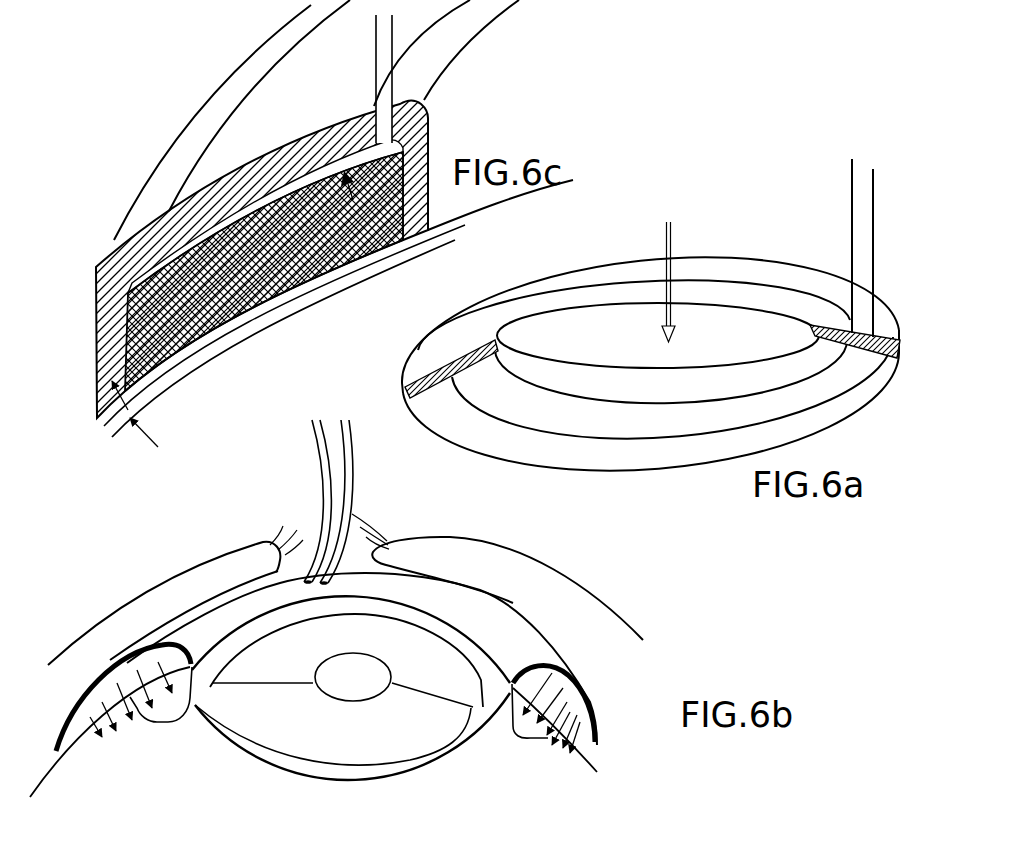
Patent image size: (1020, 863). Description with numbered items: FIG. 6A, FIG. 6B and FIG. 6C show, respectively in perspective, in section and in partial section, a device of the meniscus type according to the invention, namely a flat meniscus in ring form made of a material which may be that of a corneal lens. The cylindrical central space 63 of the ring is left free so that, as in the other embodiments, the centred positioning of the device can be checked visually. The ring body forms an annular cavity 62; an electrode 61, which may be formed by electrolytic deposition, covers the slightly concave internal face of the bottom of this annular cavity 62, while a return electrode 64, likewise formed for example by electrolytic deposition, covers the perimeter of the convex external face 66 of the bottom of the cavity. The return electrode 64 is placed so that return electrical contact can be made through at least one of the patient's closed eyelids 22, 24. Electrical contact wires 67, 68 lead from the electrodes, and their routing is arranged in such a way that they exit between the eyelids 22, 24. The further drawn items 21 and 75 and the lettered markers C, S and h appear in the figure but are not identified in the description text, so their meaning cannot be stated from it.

In FIG. 6B, the lens 21 is at (333, 780).
In FIG. 6B, the eyelid 22 is at (505, 578).
In FIG. 6B, the eyelid 24 is at (173, 595).
In FIG. 6C, the electrode 61 is at (377, 243).
In FIG. 6B, the electrode 61 is at (147, 720).
In FIG. 6C, the annular cavity 62 is at (305, 284).
In FIG. 6B, the annular cavity 62 is at (175, 725).
In FIG. 6C, the cylindrical central space 63 is at (167, 258).
In FIG. 6C, the return electrode 64 is at (297, 97).
In FIG. 6A, the return electrode 64 is at (750, 250).
In FIG. 6B, the return electrode 64 is at (213, 597).
In FIG. 6C, the convex external face 66 is at (205, 118).
In FIG. 6A, the electrical contact wire 67 is at (873, 169).
In FIG. 6B, the electrical contact wire 67 is at (323, 488).
In FIG. 6A, the electrical contact wire 68 is at (851, 181).
In FIG. 6B, the electrical contact wire 68 is at (348, 493).
In FIG. 6B, the eye 75 is at (459, 857).
In FIG. 6C, the cornea C is at (522, 193).
In FIG. 6B, the cornea C is at (377, 742).
In FIG. 6B, the sclera S is at (50, 770).
In FIG. 6C, the gap height h is at (106, 429).